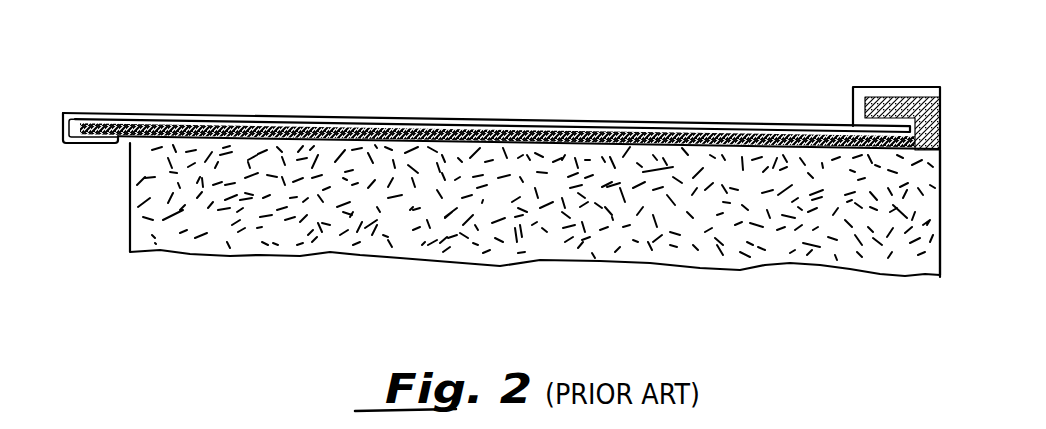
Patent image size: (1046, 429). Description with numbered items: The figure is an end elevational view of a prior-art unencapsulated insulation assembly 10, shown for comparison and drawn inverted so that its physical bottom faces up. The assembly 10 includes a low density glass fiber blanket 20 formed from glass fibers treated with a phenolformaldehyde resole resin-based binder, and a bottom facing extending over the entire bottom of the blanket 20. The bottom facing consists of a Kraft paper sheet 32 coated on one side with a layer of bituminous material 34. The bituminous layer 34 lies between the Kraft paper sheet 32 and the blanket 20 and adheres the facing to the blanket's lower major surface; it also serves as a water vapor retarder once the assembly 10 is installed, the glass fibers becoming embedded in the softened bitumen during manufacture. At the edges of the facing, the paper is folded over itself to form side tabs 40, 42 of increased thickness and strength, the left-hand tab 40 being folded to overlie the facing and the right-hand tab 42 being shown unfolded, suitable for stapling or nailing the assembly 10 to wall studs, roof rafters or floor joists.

The insulation assembly 10 is at (501, 124).
The glass fiber blanket 20 is at (398, 223).
The Kraft paper sheet 32 is at (718, 128).
The bituminous layer 34 is at (515, 130).
The tab 40 is at (878, 96).
The tab 42 is at (100, 143).